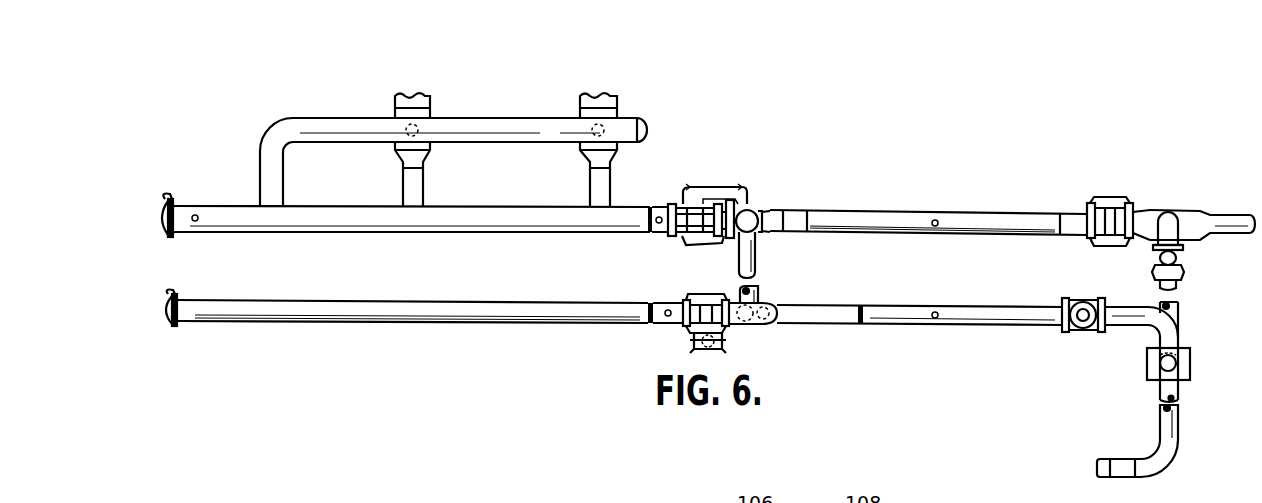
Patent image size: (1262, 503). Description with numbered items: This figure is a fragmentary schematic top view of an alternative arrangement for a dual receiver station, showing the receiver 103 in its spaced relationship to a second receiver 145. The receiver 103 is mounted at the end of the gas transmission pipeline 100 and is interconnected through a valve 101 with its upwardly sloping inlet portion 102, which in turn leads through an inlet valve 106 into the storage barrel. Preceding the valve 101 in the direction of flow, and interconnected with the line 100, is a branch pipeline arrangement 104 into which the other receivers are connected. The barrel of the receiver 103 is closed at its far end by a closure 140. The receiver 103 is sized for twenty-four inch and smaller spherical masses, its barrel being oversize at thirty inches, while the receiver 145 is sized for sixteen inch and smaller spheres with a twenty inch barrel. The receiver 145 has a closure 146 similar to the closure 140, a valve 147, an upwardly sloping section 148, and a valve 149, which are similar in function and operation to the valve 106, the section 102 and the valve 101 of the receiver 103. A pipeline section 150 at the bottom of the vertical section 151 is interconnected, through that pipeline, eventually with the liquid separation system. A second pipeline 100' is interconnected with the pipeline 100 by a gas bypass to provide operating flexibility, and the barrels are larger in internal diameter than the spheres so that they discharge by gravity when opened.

The gas transmission pipeline 100 is at (1203, 204).
The pipeline 100' is at (1137, 454).
The valve 101 is at (1105, 201).
The upwardly sloping inlet portion 102 is at (840, 211).
The receiver 103 is at (377, 231).
The branch pipeline arrangement 104 is at (1188, 275).
The inlet valve 106 is at (683, 200).
The closure 140 is at (162, 212).
The receiver 145 is at (506, 324).
The closure 146 is at (158, 306).
The valve 147 is at (726, 331).
The upwardly sloping section 148 is at (1018, 325).
The valve 149 is at (1086, 333).
The pipeline section 150 is at (761, 293).
The vertical section 151 is at (776, 330).